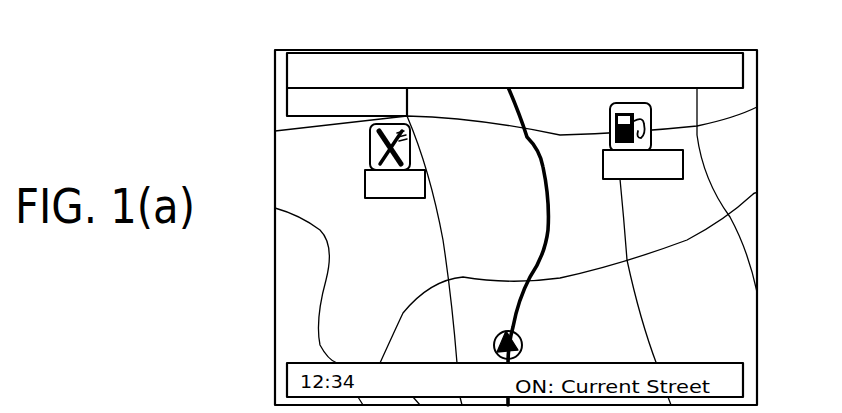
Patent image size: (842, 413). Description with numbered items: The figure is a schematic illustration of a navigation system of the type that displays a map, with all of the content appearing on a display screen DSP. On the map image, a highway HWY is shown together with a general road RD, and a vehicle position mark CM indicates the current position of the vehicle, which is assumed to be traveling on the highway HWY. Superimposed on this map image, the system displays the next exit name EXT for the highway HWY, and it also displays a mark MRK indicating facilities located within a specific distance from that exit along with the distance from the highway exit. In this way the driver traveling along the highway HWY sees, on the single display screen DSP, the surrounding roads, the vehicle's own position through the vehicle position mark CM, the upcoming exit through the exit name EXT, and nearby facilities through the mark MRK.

The next exit name EXT is at (413, 59).
The mark MRK is at (370, 147).
The display screen DSP is at (757, 132).
The general road RD is at (737, 231).
The highway HWY is at (548, 215).
The vehicle position mark CM is at (522, 342).